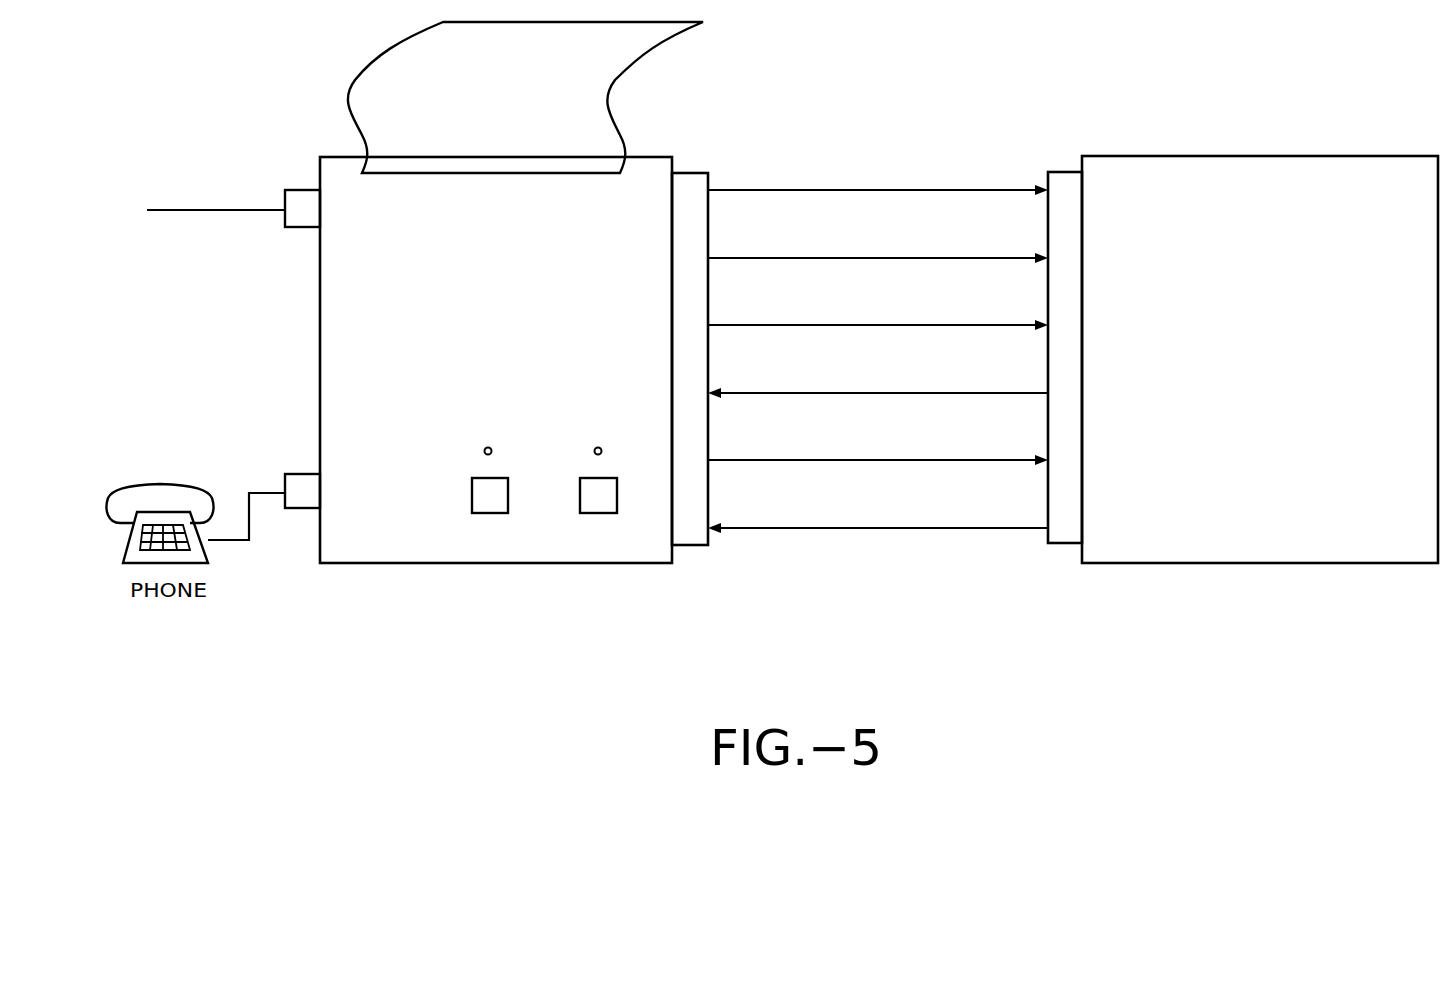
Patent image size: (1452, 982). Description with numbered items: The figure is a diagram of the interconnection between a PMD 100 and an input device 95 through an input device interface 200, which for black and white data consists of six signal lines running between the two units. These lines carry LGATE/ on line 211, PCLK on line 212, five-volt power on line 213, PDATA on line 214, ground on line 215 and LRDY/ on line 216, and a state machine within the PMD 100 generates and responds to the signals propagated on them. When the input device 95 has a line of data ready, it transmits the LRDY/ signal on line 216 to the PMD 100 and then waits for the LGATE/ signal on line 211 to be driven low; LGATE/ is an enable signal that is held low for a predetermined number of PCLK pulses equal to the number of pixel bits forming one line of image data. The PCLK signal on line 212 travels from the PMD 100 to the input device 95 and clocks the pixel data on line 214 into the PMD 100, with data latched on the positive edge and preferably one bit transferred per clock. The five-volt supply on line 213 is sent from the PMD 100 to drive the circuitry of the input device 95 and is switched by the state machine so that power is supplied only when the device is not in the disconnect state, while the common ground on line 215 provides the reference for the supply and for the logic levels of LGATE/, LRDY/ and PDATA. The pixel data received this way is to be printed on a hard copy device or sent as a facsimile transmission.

The input device 95 is at (1184, 600).
The PMD 100 is at (481, 600).
The input device interface 200 is at (878, 288).
The LGATE/ signal line 211 is at (933, 190).
The PCLK signal line 212 is at (932, 258).
The power (+5 V) line 213 is at (930, 325).
The PDATA line 214 is at (928, 393).
The ground line 215 is at (930, 460).
The LRDY/ signal line 216 is at (930, 528).